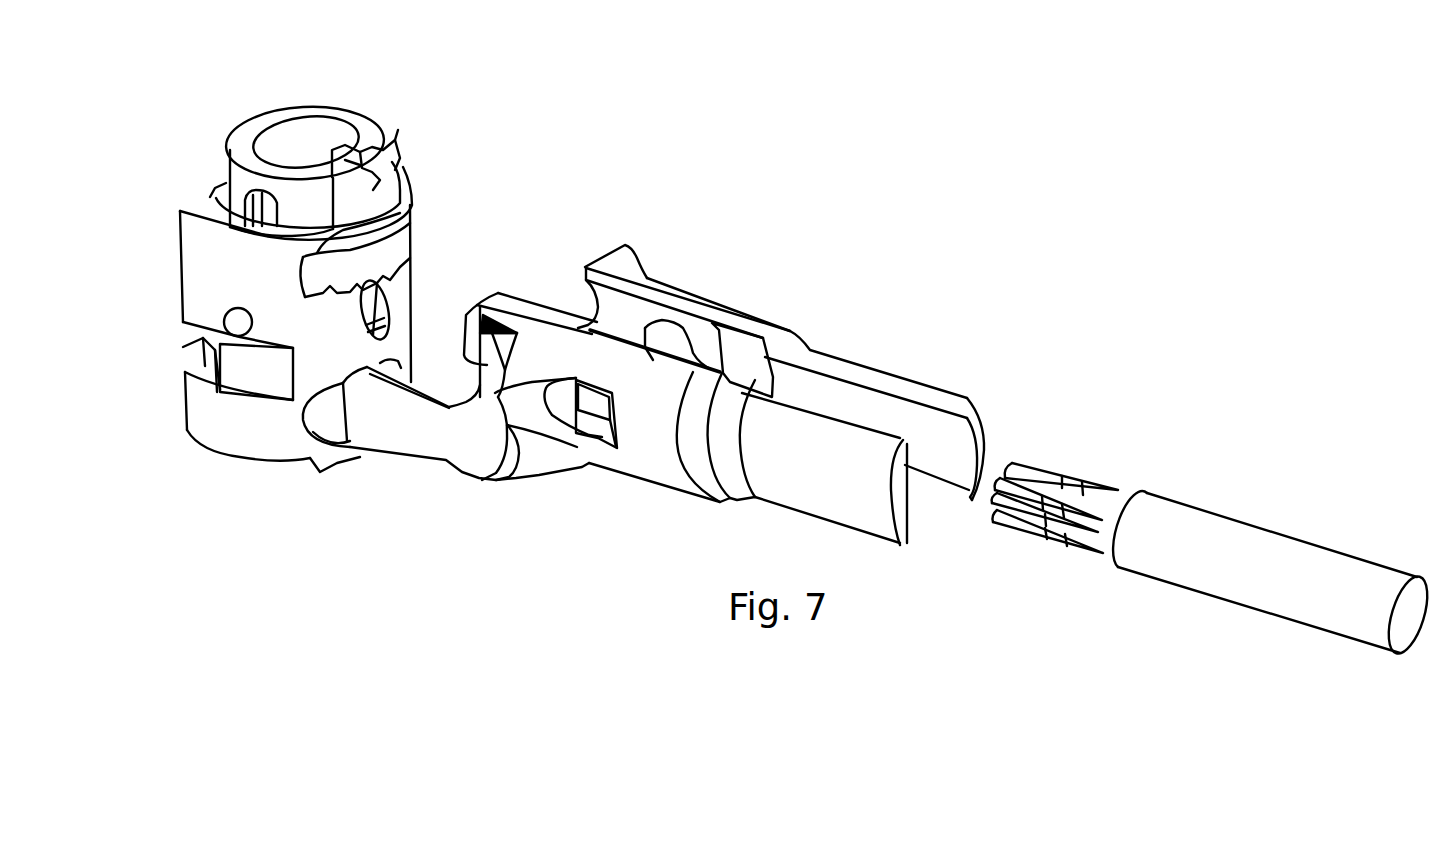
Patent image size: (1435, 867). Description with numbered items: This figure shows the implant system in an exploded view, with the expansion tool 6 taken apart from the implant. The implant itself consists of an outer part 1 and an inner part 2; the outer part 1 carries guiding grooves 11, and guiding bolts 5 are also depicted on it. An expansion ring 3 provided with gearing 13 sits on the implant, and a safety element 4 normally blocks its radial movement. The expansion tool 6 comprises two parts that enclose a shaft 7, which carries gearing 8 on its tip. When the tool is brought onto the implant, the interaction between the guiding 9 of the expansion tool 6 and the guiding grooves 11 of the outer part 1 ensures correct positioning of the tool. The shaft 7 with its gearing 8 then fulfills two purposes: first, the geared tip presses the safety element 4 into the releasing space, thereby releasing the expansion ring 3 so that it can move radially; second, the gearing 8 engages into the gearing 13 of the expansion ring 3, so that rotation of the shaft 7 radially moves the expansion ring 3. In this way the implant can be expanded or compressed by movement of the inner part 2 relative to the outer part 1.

The outer part 1 is at (400, 168).
The inner part 2 is at (237, 140).
The expansion ring 3 is at (397, 242).
The safety element 4 is at (377, 307).
The guide bolts 5 is at (240, 317).
The expansion tool 6 is at (778, 340).
The shaft 7 is at (1222, 540).
The gearing of shaft 8 is at (1063, 473).
The guiding of expansion tool 9 is at (408, 423).
The guiding groove 11 is at (257, 362).
The gearing expansion ring 13 is at (383, 280).